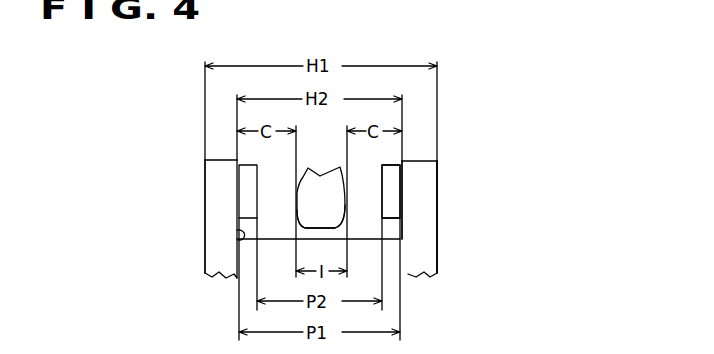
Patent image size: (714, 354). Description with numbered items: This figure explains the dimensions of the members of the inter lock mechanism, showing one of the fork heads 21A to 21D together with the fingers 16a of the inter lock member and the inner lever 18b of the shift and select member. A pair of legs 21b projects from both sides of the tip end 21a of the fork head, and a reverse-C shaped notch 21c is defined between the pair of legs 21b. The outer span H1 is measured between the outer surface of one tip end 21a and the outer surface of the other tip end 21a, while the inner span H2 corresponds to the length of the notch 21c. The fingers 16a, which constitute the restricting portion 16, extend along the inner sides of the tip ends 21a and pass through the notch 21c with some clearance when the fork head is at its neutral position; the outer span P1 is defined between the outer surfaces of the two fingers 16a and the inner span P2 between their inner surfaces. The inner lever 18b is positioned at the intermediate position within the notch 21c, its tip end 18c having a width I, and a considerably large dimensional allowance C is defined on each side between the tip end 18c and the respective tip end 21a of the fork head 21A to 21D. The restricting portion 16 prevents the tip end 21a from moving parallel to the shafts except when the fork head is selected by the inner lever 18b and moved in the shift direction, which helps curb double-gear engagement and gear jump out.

The restricting portion 16 is at (390, 164).
The first fingers 16a is at (245, 190).
The inner lever 18b is at (307, 177).
The tip end of inner lever 18c is at (332, 213).
The tip end of fork head 21a is at (437, 229).
The legs 21b is at (211, 167).
The notch 21c is at (240, 243).
The first fork head 21A is at (428, 280).
The fourth fork head 21D is at (321, 216).